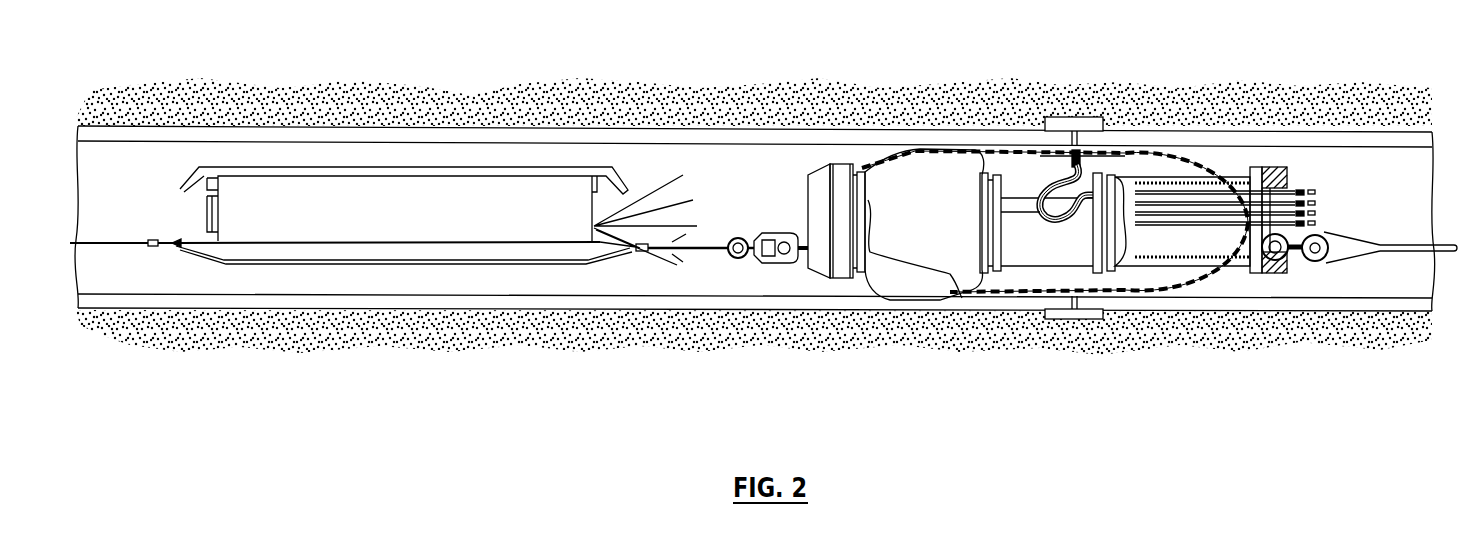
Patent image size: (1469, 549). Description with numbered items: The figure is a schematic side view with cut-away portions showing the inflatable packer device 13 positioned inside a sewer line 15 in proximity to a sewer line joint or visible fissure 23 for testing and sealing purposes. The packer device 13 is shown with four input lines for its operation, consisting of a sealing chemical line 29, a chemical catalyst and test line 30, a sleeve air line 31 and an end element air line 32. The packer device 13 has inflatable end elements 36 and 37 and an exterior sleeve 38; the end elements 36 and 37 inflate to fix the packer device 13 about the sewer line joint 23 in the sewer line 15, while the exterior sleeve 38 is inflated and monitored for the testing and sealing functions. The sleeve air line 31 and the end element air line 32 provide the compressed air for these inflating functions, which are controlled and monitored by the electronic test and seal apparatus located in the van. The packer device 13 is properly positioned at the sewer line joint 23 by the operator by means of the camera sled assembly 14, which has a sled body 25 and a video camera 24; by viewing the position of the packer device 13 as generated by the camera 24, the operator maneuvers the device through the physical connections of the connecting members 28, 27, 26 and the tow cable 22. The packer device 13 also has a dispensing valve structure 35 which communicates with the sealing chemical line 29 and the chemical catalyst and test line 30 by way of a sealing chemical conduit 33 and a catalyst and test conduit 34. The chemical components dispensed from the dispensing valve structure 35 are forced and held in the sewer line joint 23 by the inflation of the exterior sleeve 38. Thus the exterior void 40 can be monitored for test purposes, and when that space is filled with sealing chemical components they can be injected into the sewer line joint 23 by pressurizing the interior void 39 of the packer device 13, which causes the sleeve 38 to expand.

The inflatable packer device 13 is at (858, 290).
The camera sled assembly 14 is at (367, 160).
The sewer line 15 is at (735, 165).
The tow cable 22 is at (125, 245).
The sewer line joint 23 is at (1080, 140).
The video camera 24 is at (598, 232).
The sled body 25 is at (445, 258).
The connecting member 26 is at (705, 250).
The connecting member 27 is at (770, 262).
The connecting member 28 is at (1325, 263).
The sealing chemical line 29 is at (1300, 190).
The chemical catalyst and test line 30 is at (1318, 202).
The sleeve air line 31 is at (1318, 213).
The end element air line 32 is at (1325, 255).
The sealing chemical conduit 33 is at (1062, 208).
The catalyst and test conduit 34 is at (1037, 214).
The dispensing valve structure 35 is at (1082, 152).
The inflatable end element 36 is at (953, 268).
The inflatable end element 37 is at (1205, 280).
The exterior sleeve 38 is at (967, 158).
The interior void 39 is at (1018, 170).
The exterior void 40 is at (1040, 150).